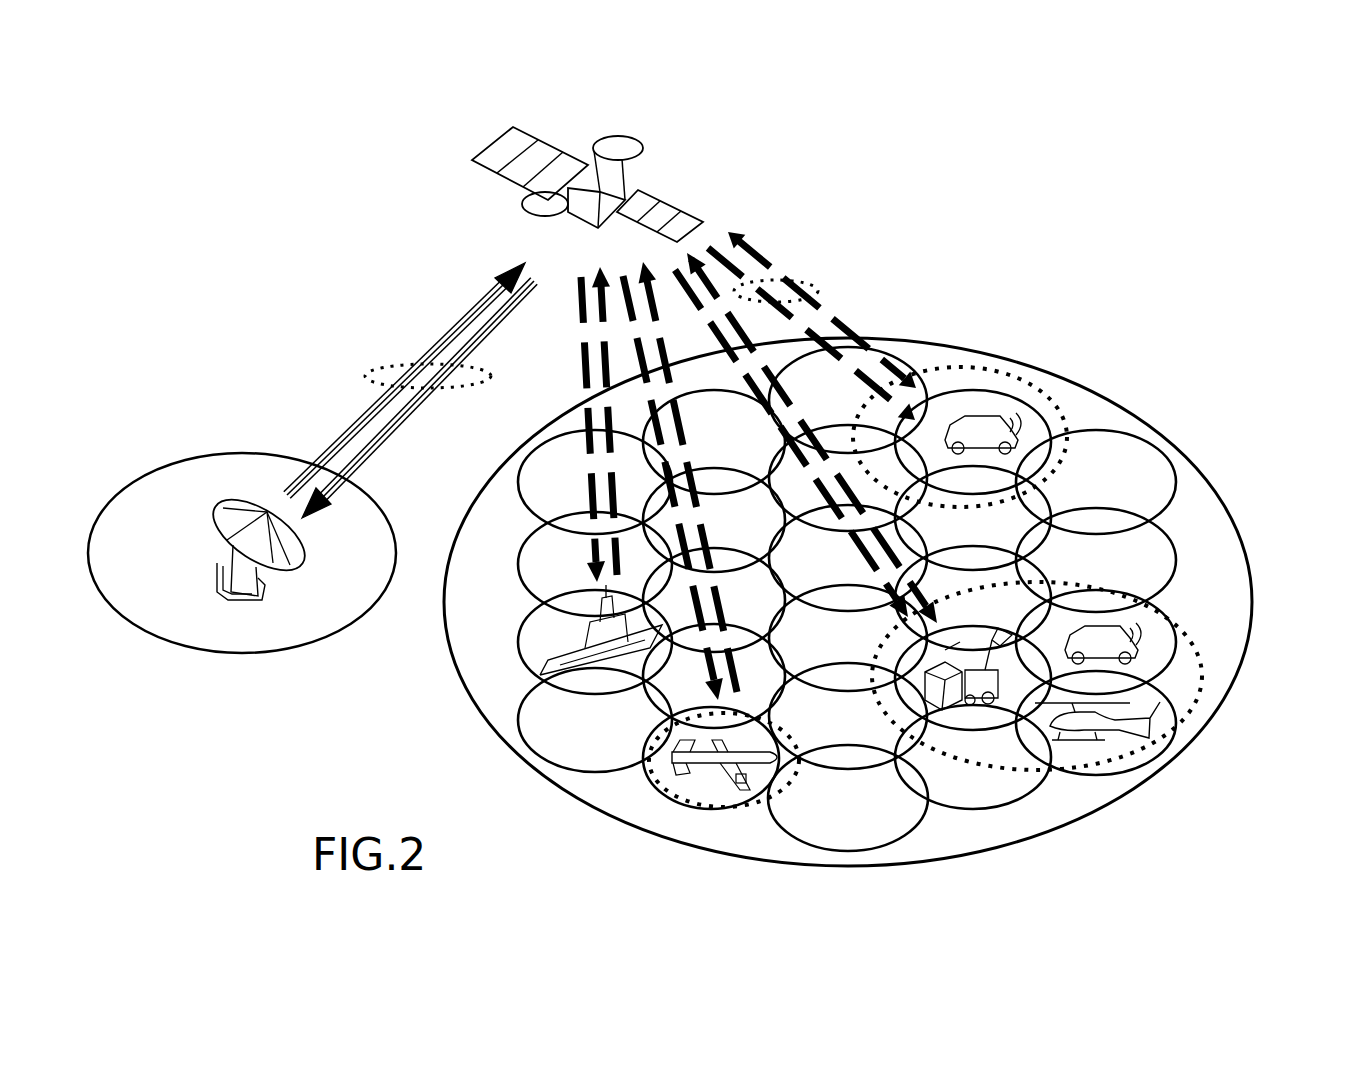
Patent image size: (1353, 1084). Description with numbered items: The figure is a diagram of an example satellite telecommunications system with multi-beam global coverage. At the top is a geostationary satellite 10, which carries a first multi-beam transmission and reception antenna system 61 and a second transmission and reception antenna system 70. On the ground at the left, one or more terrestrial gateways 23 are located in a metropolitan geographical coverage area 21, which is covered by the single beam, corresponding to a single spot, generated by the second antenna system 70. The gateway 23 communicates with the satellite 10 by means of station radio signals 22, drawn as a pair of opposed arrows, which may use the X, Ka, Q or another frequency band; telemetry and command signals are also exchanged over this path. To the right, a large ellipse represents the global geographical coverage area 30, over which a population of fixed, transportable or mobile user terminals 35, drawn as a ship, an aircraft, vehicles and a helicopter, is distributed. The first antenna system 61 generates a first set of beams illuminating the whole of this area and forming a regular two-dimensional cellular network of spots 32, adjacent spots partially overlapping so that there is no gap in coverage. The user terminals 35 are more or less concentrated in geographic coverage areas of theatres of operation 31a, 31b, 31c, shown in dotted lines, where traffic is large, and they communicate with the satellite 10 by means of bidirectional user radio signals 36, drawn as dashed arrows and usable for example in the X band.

The geostationary satellite 10 is at (590, 160).
The first multi-beam transmission and reception antenna system 61 is at (643, 144).
The second transmission and reception antenna system 70 is at (522, 202).
The metropolitan geographical coverage area 21 is at (332, 632).
The station radio signals 22 is at (362, 375).
The terrestrial gateway 23 is at (225, 547).
The global geographical coverage area 30 is at (1160, 767).
The spots 32 is at (1027, 803).
The geographic coverage area of theatre of operation 31a is at (1037, 390).
The geographic coverage area of theatre of operation 31b is at (705, 800).
The geographic coverage area of theatre of operation 31c is at (1197, 668).
The user terminals 35 is at (575, 625).
The user radio signals 36 is at (817, 290).